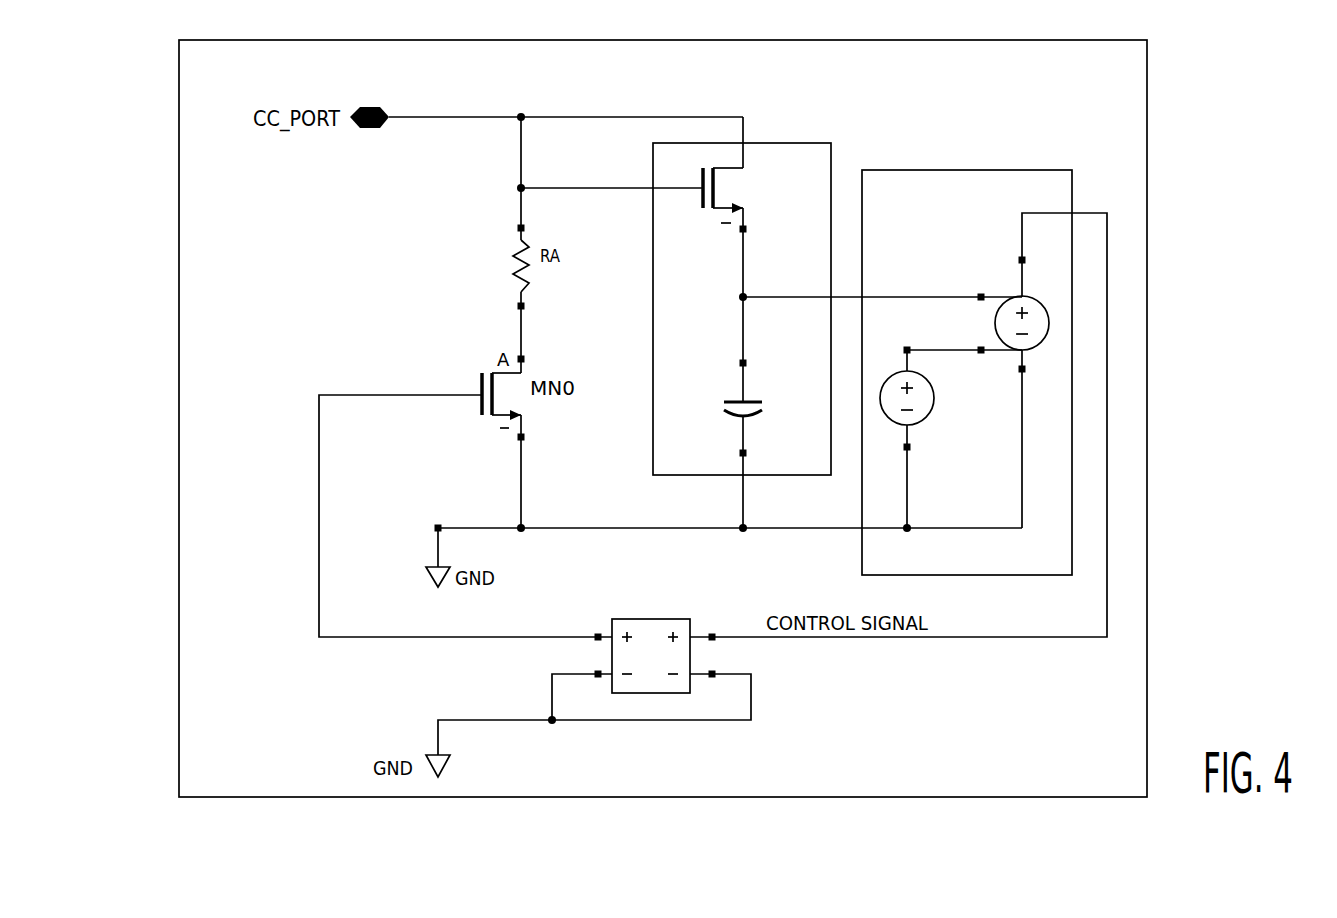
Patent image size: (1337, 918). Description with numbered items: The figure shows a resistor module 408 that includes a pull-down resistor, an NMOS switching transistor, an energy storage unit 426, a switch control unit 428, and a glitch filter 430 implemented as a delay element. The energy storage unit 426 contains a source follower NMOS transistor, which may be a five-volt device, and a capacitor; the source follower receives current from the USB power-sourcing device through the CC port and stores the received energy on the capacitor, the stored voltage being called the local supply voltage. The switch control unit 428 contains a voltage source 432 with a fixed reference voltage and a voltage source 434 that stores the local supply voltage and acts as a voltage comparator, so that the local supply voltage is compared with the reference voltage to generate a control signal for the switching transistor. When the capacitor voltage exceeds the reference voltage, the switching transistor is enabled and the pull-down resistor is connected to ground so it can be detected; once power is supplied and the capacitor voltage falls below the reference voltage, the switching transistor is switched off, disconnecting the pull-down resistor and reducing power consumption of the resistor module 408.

The resistor module 408 is at (1147, 77).
The energy storage unit 426 is at (831, 143).
The switch control unit 428 is at (1040, 372).
The glitch filter 430 is at (690, 655).
The voltage source 432 is at (934, 400).
The voltage source 434 is at (1049, 323).